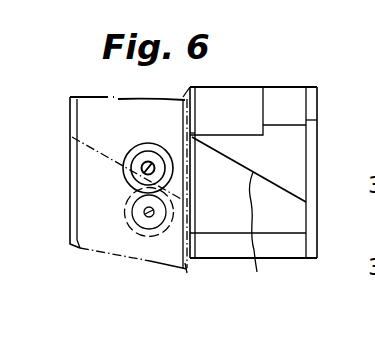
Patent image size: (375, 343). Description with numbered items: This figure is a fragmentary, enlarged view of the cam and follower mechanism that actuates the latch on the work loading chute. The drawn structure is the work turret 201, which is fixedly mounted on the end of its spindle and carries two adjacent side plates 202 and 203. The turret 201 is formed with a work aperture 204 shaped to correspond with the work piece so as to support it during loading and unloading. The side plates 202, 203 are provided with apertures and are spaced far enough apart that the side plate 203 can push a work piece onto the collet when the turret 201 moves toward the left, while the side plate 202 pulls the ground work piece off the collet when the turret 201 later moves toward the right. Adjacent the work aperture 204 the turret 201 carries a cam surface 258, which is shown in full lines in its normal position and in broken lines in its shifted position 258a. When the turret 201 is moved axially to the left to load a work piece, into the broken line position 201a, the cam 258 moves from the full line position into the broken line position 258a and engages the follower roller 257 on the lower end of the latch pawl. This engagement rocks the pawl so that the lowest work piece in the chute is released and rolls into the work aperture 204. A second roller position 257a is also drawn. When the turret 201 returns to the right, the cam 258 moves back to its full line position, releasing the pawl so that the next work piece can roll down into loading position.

The work turret 201 is at (278, 156).
The broken line position of the turret 201a is at (108, 246).
The side plate 202 is at (188, 96).
The side plate 203 is at (312, 93).
The work aperture 204 is at (272, 100).
The follower roller 257 is at (142, 142).
The lower disk 257a is at (124, 212).
The cam surface 258 is at (265, 233).
The broken line position of the cam 258a is at (97, 152).